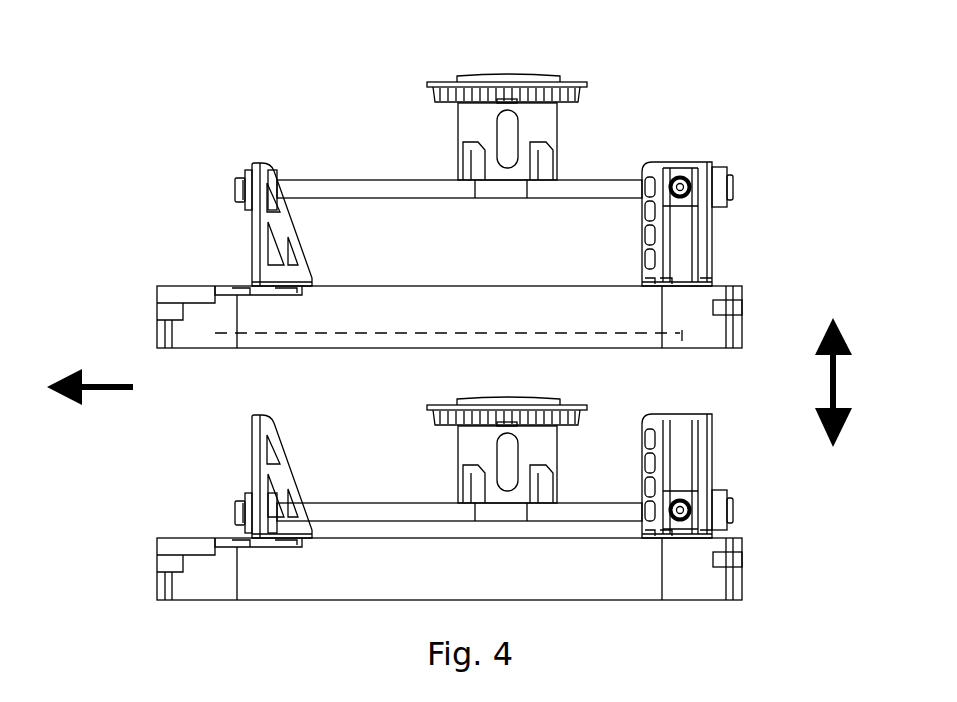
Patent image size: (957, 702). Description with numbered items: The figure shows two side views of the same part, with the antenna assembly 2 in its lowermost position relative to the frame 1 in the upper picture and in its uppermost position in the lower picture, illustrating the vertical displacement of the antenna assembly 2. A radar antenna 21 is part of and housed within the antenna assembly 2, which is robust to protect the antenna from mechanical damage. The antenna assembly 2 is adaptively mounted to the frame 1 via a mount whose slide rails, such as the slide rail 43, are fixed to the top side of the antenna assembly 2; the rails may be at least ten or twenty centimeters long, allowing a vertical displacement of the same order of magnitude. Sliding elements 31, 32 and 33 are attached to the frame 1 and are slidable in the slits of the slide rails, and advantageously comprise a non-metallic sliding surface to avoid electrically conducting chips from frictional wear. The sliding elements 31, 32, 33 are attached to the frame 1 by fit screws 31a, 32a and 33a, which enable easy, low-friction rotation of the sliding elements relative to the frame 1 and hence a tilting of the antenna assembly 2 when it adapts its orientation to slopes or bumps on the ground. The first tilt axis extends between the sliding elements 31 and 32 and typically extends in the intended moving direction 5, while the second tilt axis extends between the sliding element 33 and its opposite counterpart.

The frame 1 is at (327, 187).
The antenna assembly 2 is at (510, 298).
The radar antenna 21 is at (360, 338).
The intended moving direction 5 is at (90, 396).
The sliding element 31 is at (249, 168).
The fit screw 31a is at (235, 188).
The sliding element 32 is at (727, 167).
The fit screw 32a is at (735, 185).
The sliding element 33 is at (672, 170).
The fit screw 33a is at (687, 175).
The slide rail 43 is at (678, 240).